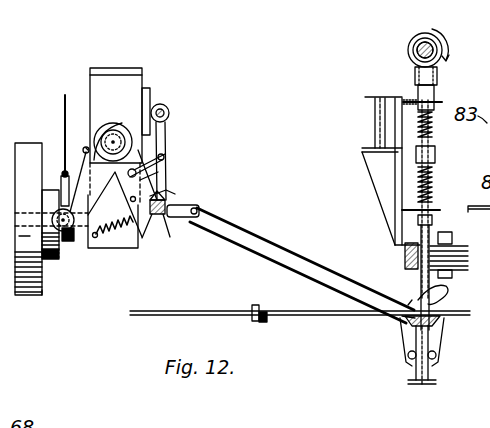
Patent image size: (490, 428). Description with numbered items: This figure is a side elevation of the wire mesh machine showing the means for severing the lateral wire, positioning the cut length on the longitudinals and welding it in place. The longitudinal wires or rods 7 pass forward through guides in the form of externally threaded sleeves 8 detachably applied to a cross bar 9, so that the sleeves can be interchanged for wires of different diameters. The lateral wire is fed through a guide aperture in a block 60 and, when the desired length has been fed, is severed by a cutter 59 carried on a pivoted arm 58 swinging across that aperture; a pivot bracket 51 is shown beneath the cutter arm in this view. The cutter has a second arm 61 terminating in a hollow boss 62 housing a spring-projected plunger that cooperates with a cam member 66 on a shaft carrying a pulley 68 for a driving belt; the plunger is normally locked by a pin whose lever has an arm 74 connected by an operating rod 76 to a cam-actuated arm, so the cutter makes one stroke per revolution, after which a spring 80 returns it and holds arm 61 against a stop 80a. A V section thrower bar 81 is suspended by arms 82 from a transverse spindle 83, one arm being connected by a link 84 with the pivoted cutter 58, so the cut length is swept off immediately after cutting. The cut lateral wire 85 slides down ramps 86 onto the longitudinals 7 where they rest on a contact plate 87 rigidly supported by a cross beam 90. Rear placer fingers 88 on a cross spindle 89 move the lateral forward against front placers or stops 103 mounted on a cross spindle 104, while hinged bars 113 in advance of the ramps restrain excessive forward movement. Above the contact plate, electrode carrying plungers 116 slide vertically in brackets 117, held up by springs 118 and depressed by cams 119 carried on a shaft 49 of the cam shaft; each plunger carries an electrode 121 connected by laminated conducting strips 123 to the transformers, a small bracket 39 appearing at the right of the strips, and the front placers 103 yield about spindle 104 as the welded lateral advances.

The longitudinal wires or rods 7 is at (188, 306).
The externally threaded sleeves 8 is at (262, 312).
The cross bar 9 is at (266, 322).
The bracket 39 is at (478, 205).
The shaft 49 is at (418, 56).
The pivot bracket 51 is at (160, 214).
The pivoted arm 58 is at (150, 160).
The cutter 59 is at (145, 252).
The block 60 is at (172, 192).
The second arm 61 is at (126, 126).
The hollow boss 62 is at (72, 232).
The cam member 66 is at (52, 258).
The pulley 68 is at (32, 294).
The arm 74 is at (60, 182).
The operating rod 76 is at (63, 100).
The spring 80 is at (119, 237).
The stop 80a is at (86, 148).
The V section bar 81 is at (176, 205).
The arms 82 is at (167, 140).
The transverse spindle 83 is at (166, 106).
The link 84 is at (150, 175).
The cut lateral wire 85 is at (438, 306).
The ramps 86 is at (248, 250).
The contact plate 87 is at (402, 330).
The rear placer fingers 88 is at (410, 300).
The cross spindle 89 is at (408, 352).
The cross beam 90 is at (418, 386).
The front placers or stops 103 is at (444, 332).
The cross spindle 104 is at (444, 368).
The hinged bars 113 is at (292, 254).
The electrode carrying plungers 116 is at (412, 88).
The brackets 117 is at (378, 185).
The springs 118 is at (437, 172).
The cams 119 is at (420, 32).
The electrode 121 is at (404, 240).
The laminated conducting strips 123 is at (454, 246).